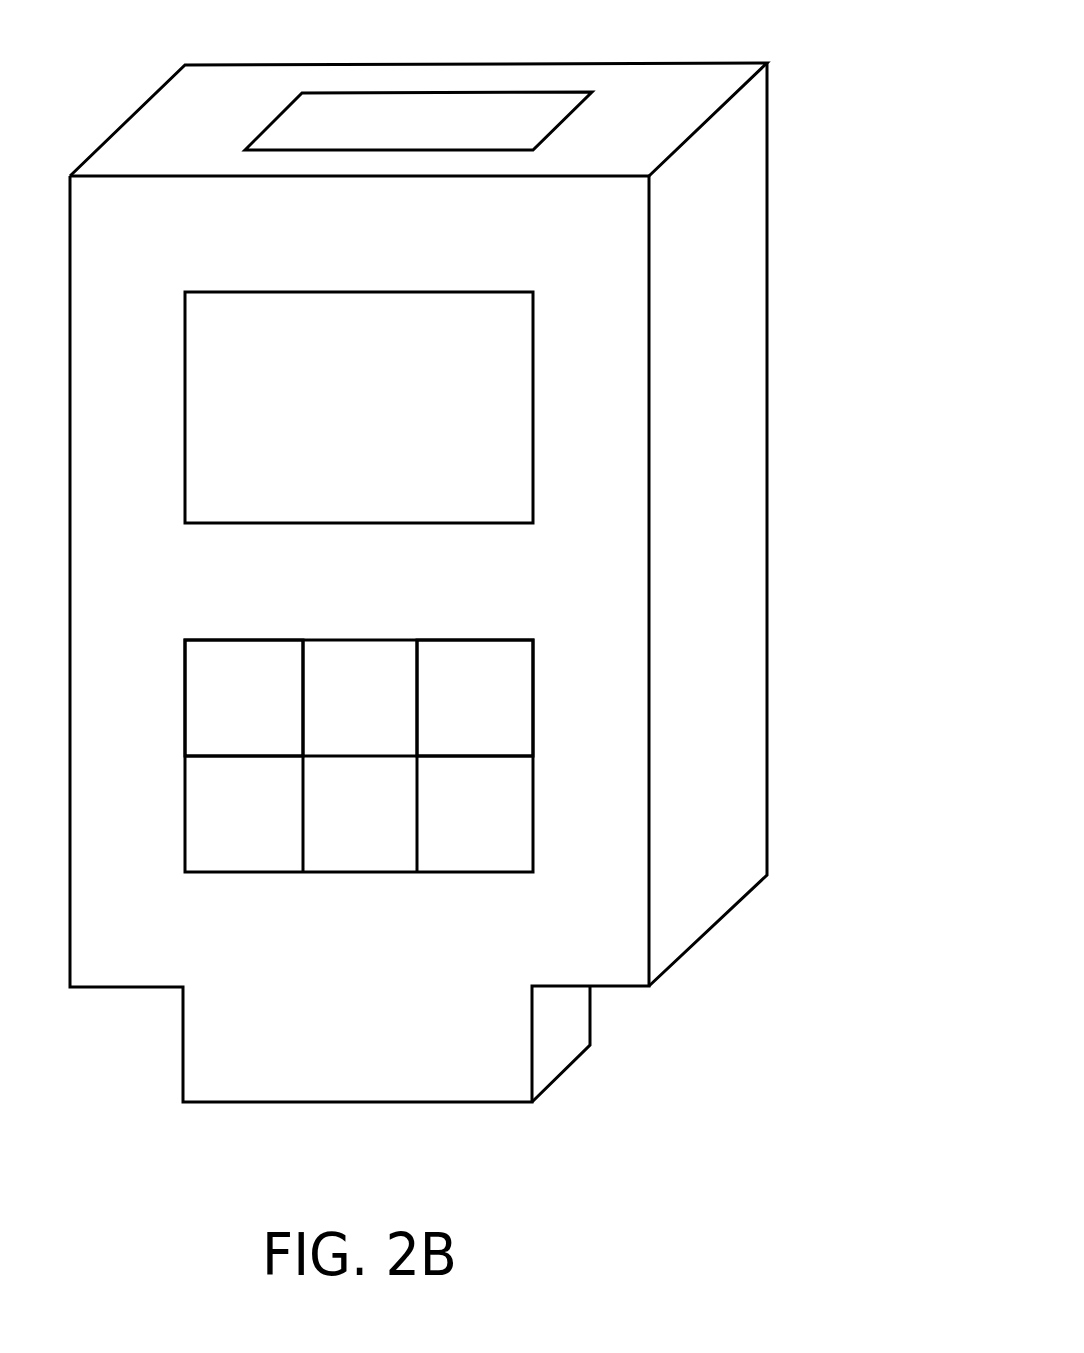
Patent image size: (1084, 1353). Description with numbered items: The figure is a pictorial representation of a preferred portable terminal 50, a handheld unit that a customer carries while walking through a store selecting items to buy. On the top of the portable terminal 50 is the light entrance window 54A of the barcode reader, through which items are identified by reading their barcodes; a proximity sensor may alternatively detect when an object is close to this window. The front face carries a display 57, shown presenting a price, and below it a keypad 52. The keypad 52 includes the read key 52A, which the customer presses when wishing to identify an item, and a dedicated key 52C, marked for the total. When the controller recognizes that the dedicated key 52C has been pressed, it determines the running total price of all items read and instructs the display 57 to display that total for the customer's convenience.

The portable terminal 50 is at (822, 282).
The light entrance window 54A is at (420, 112).
The display 57 is at (408, 280).
The keypad 52 is at (398, 774).
The read key 52A is at (233, 625).
The dedicated key 52C is at (466, 625).